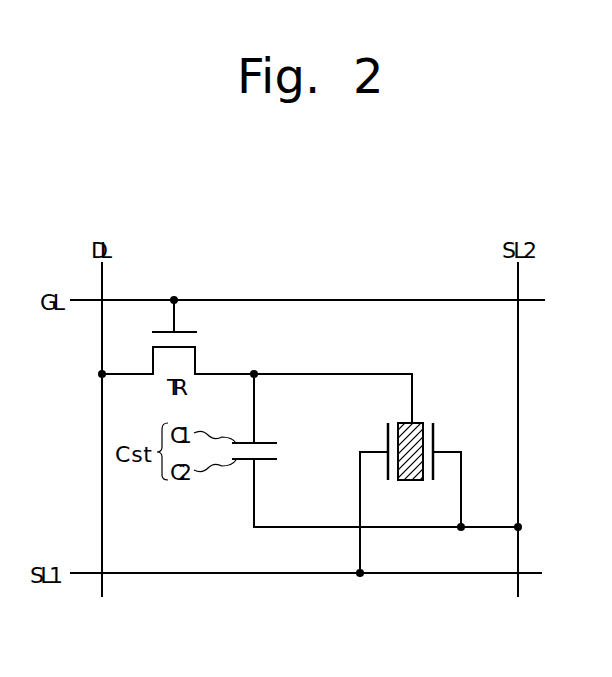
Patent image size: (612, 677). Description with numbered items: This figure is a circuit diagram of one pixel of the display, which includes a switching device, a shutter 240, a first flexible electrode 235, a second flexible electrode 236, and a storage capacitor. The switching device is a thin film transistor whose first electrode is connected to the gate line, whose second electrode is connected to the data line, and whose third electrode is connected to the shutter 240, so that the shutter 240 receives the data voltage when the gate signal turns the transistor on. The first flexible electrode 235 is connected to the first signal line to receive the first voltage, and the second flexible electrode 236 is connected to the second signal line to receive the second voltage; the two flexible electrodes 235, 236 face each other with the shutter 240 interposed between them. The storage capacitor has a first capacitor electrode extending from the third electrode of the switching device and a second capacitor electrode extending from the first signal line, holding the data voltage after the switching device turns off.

The first flexible electrode 235 is at (386, 432).
The second flexible electrode 236 is at (435, 432).
The shutter 240 is at (413, 419).